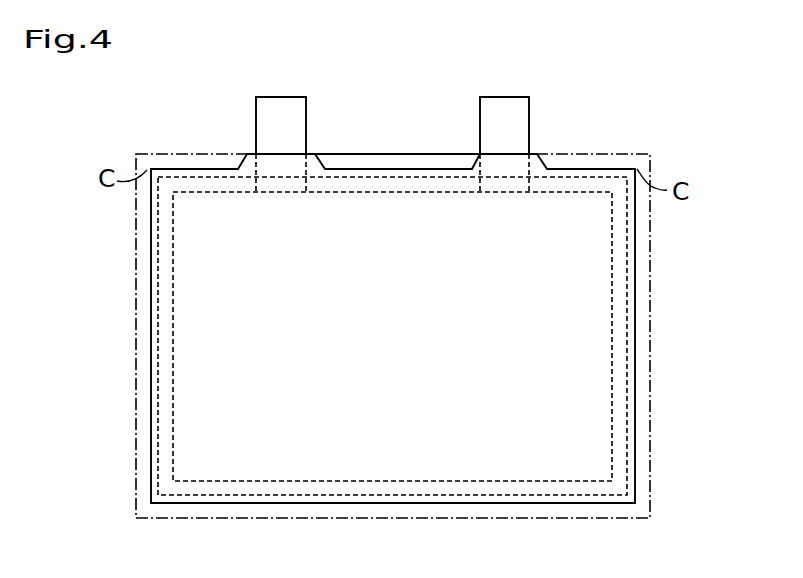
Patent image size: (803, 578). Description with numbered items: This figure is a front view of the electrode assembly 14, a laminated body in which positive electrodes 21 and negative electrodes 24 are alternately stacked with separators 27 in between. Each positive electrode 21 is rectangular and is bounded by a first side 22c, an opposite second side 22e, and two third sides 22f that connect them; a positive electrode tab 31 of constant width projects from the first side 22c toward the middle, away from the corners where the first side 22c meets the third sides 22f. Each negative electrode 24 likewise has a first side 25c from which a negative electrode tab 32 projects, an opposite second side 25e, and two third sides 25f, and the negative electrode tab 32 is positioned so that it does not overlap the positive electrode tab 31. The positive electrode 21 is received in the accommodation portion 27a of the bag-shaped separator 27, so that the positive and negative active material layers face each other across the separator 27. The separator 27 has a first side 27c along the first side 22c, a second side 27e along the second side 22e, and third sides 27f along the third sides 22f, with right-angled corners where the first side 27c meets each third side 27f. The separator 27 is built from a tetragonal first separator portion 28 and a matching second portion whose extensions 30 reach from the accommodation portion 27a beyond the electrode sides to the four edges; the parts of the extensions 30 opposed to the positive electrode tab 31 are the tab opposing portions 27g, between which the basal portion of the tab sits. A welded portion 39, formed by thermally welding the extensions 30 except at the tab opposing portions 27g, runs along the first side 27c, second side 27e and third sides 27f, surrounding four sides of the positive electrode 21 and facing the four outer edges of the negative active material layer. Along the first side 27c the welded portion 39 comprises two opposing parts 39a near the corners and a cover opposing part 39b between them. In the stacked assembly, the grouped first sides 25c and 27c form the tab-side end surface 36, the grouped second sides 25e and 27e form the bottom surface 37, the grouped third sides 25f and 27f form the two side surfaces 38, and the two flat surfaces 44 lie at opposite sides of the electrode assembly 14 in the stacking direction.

The electrode assembly 14 is at (637, 428).
The positive electrode 21 is at (612, 349).
The first side 22c is at (197, 192).
The second side 22e is at (276, 486).
The third sides 22f is at (172, 409).
The negative electrode 24 is at (640, 251).
The first side 25c is at (341, 169).
The second side 25e is at (402, 497).
The third sides 25f is at (160, 335).
The separator 27 is at (347, 153).
The accommodation portion 27a is at (563, 317).
The first side 27c is at (402, 154).
The second side 27e is at (481, 503).
The third sides 27f is at (151, 369).
The tab opposing portions 27g is at (248, 170).
The first separator portion 28 is at (151, 472).
The extensions 30 is at (651, 502).
The positive electrode tab 31 is at (278, 107).
The negative electrode tab 32 is at (503, 107).
The tab-side end surface 36 is at (452, 154).
The bottom surface 37 is at (341, 503).
The side surfaces 38 is at (151, 454).
The welded portion 39 is at (151, 247).
The opposing parts 39a is at (563, 170).
The cover opposing part 39b is at (432, 151).
The flat surfaces 44 is at (167, 298).